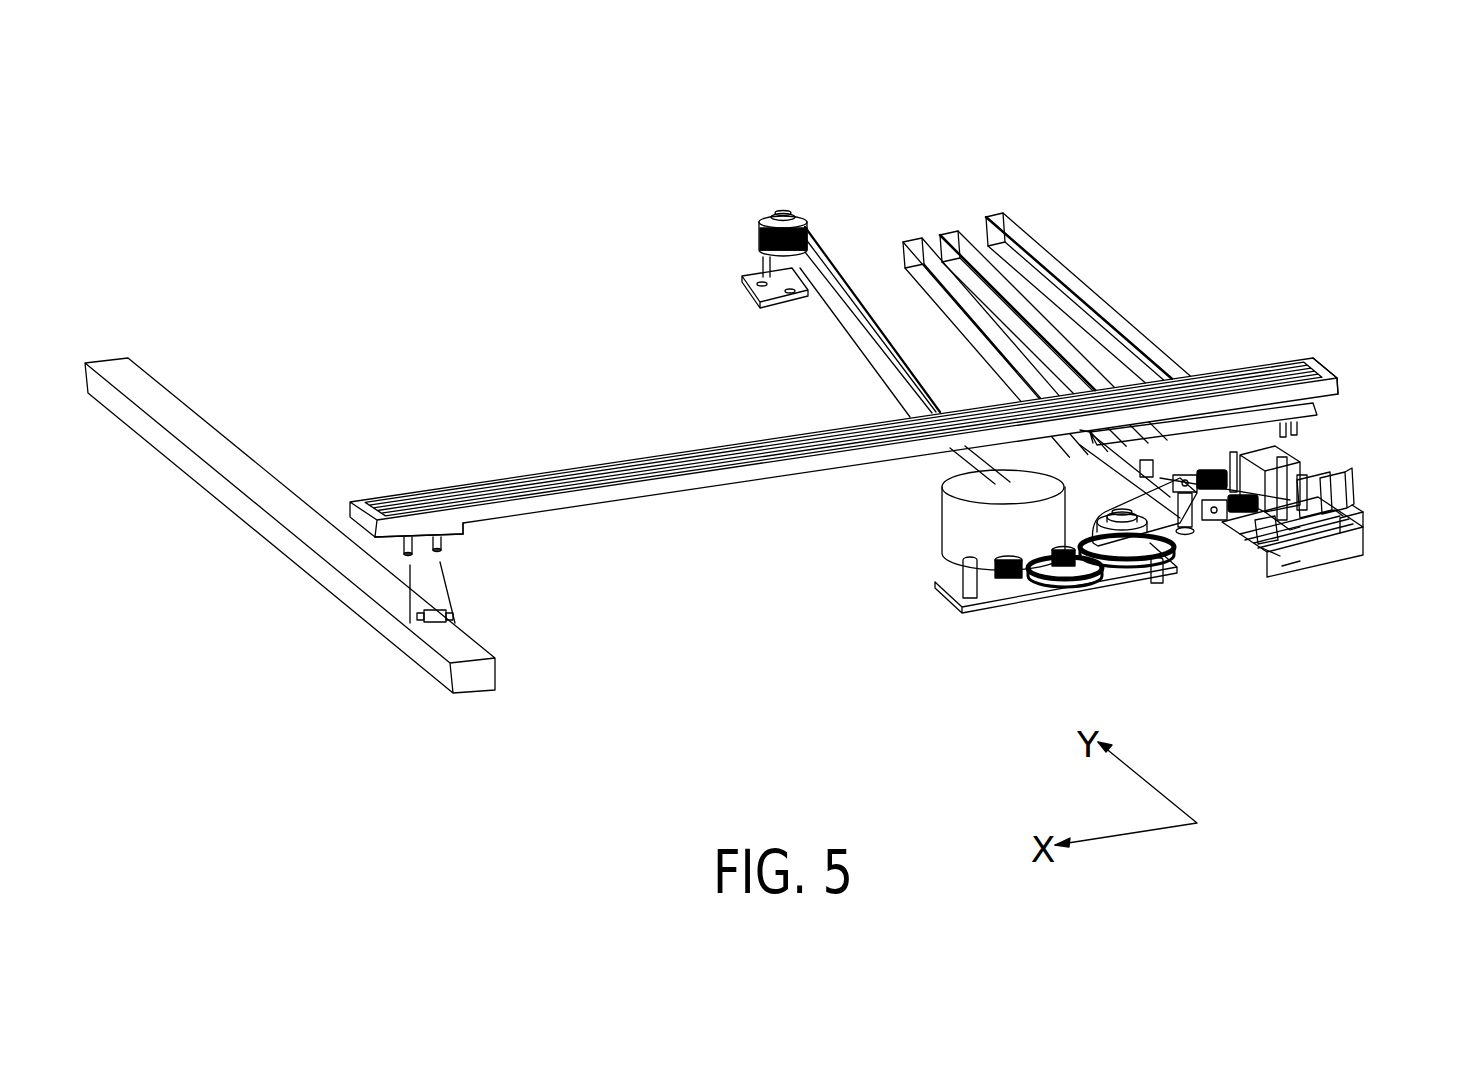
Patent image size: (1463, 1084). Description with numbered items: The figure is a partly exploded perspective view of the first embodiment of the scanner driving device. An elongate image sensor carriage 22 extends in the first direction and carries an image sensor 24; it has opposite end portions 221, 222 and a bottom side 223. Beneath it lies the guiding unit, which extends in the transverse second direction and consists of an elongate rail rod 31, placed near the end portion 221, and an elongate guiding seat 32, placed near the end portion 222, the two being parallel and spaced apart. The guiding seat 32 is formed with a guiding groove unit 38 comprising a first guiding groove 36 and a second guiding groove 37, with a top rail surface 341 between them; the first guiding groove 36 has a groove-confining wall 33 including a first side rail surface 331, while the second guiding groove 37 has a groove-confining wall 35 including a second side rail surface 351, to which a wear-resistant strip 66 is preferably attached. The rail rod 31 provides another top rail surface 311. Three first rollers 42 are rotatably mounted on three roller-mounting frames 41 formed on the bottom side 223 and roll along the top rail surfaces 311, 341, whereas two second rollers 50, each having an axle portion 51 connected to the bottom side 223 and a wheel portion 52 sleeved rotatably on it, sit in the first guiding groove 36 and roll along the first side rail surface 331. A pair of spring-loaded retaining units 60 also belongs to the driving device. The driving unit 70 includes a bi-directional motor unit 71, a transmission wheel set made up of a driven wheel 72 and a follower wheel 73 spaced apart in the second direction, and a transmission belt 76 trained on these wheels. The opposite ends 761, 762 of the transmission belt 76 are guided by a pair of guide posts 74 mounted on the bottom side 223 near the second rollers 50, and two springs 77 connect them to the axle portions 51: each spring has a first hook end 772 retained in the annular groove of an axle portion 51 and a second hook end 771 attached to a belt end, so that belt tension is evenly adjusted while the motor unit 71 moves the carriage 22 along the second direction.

The image sensor carriage 22 is at (897, 473).
The end portion 221 is at (387, 530).
The end portion 222 is at (1337, 383).
The bottom side 223 is at (567, 510).
The image sensor 24 is at (532, 485).
The rail rod 31 is at (290, 525).
The top rail surface 311 is at (297, 520).
The guiding seat 32 is at (1046, 285).
The groove-confining wall 33 is at (1307, 598).
The first side rail surface 331 is at (1270, 560).
The groove-confining wall 35 is at (1339, 555).
The top rail surface 341 is at (1300, 530).
The second side rail surface 351 is at (1313, 557).
The first guiding groove 36 is at (1300, 570).
The second guiding groove 37 is at (1290, 560).
The guiding groove unit 38 is at (1438, 588).
The roller-mounting frames 41 is at (403, 546).
The first rollers 42 is at (453, 623).
The second rollers 50 is at (1282, 502).
The axle portion 51 is at (1265, 480).
The wheel portion 52 is at (1262, 548).
The spring-loaded retaining units 60 is at (1343, 497).
The wear-resistant strip 66 is at (1060, 290).
The driving unit 70 is at (1018, 590).
The bi-directional motor unit 71 is at (947, 518).
The driven wheel 72 is at (1097, 563).
The follower wheel 73 is at (765, 227).
The guide posts 74 is at (1163, 487).
The transmission belt 76 is at (845, 328).
The end of transmission belt 761 is at (1200, 520).
The end of transmission belt 762 is at (1183, 470).
The springs 77 is at (1239, 448).
The second hook end 771 is at (1195, 470).
The first hook end 772 is at (1255, 470).